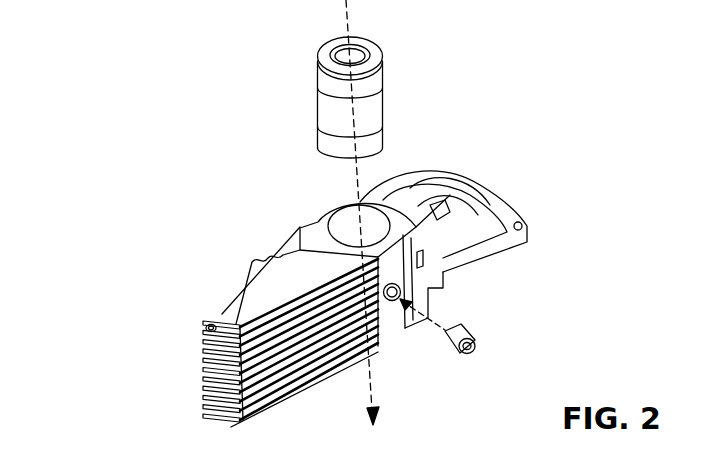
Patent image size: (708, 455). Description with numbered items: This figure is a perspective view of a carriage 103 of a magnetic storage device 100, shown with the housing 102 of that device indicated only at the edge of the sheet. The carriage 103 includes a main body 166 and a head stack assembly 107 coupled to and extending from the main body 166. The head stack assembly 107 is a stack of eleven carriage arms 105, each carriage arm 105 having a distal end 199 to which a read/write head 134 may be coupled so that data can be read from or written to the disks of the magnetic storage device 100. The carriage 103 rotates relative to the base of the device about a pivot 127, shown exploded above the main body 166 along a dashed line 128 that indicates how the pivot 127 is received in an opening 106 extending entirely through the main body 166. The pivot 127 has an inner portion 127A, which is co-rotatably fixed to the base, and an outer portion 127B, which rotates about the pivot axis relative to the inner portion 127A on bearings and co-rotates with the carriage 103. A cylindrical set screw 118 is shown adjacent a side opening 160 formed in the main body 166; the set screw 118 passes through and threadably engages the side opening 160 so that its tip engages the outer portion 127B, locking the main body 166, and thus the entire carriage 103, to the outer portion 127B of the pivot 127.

The magnetic storage device 100 is at (343, 12).
The housing 102 is at (598, 0).
The carriage 103 is at (393, 262).
The carriage arm 105 is at (225, 312).
The opening 106 is at (344, 223).
The head stack assembly 107 is at (206, 189).
The set screw 118 is at (463, 328).
The pivot 127 is at (337, 112).
The inner portion 127A is at (337, 44).
The outer portion 127B is at (372, 50).
The axis 128 is at (364, 375).
The read/write head 134 is at (212, 324).
The side opening 160 is at (393, 302).
The main body 166 is at (308, 214).
The distal end 199 is at (201, 331).